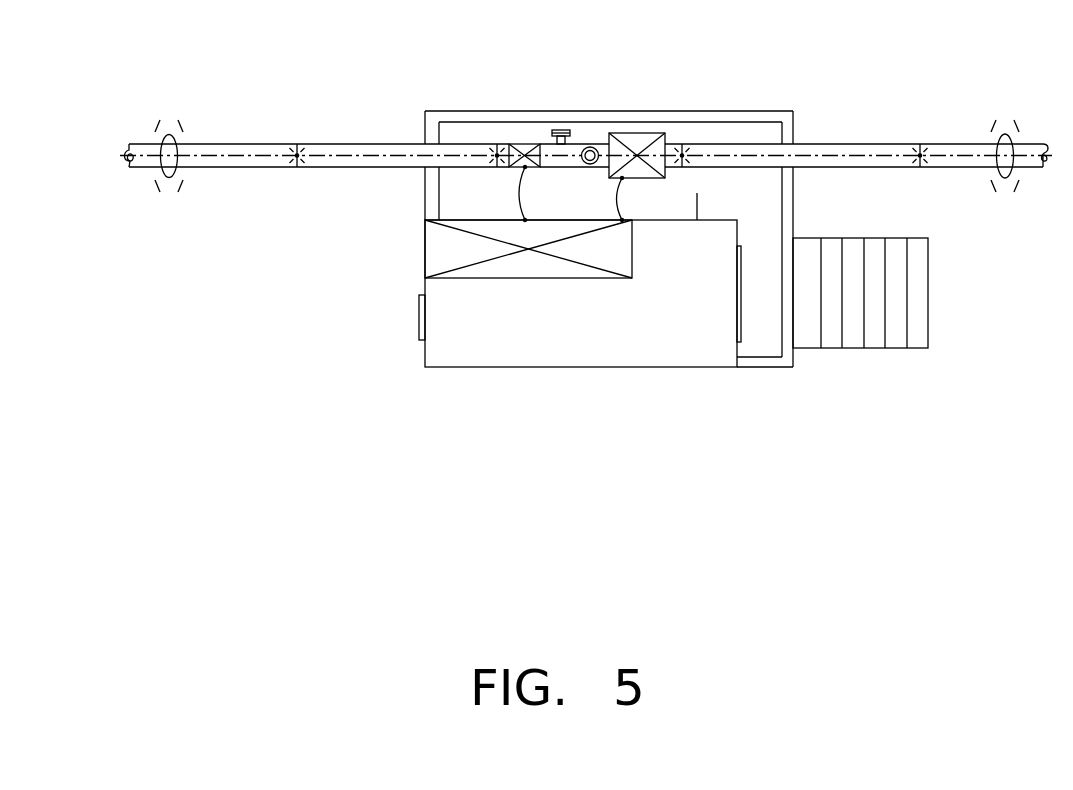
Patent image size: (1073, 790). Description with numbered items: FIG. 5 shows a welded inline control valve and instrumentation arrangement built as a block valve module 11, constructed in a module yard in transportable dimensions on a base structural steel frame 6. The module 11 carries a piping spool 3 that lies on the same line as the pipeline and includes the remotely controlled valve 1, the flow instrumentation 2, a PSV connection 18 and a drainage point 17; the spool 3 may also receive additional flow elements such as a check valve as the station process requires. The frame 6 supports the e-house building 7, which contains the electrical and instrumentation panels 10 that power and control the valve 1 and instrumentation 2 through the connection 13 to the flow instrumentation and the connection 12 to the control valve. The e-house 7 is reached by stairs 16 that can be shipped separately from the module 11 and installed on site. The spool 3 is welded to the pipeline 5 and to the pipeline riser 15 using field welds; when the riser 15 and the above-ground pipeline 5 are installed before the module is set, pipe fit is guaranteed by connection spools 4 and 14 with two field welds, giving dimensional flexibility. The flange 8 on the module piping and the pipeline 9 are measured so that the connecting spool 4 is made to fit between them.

The control valve 1 is at (638, 133).
The flow instrument 2 is at (525, 144).
The spool 3 is at (577, 144).
The connection spool 4 is at (367, 143).
The pipeline 5 is at (269, 143).
The structural steel frame 6 is at (715, 118).
The e-house building 7 is at (503, 350).
The flange 8 is at (496, 143).
The pipeline 9 is at (299, 168).
The electrical and instrumentation panels 10 is at (532, 267).
The module 11 is at (697, 193).
The connection to control valve 12 is at (618, 205).
The connection to flow instrumentation 13 is at (519, 200).
The connection spool 14 is at (848, 148).
The pipeline riser 15 is at (997, 140).
The stairs 16 is at (873, 247).
The drainage point 17 is at (560, 130).
The PSV connection 18 is at (594, 146).